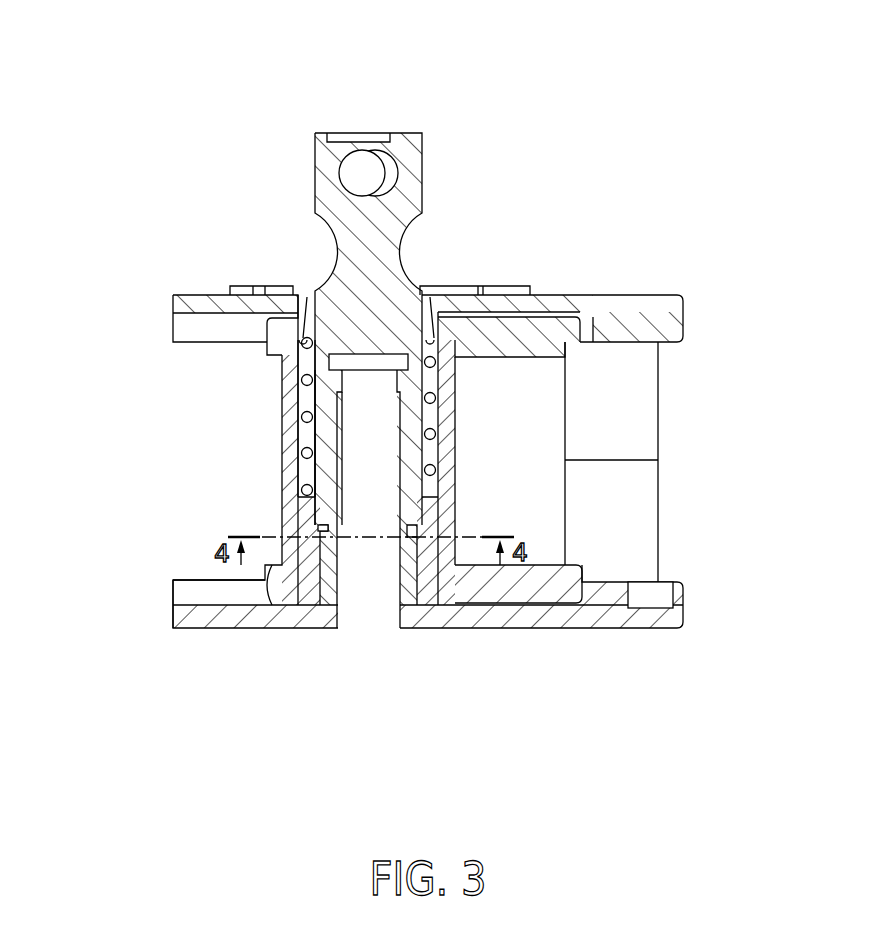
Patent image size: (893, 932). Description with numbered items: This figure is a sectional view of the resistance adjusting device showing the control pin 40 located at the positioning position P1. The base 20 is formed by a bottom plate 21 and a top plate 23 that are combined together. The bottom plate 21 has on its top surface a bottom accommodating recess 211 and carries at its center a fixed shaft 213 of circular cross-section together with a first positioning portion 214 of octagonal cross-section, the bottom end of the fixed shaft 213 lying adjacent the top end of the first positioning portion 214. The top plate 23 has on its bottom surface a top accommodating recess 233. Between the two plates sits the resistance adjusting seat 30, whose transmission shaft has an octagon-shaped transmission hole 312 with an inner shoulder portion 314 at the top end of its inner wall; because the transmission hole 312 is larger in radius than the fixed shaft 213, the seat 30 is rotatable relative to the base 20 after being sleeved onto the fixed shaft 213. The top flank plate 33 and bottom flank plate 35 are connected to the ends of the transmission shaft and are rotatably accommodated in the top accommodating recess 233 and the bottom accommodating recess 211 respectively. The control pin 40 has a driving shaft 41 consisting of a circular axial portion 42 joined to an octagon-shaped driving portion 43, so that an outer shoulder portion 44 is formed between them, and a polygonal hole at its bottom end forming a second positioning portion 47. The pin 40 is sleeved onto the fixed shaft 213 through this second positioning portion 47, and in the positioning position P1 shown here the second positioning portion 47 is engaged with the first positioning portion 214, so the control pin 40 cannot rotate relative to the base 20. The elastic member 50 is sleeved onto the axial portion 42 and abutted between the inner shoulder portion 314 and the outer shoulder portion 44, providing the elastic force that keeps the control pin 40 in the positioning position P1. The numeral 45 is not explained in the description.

The positioning position P1 is at (270, 116).
The base 20 is at (179, 275).
The bottom plate 21 is at (683, 621).
The bottom accommodating recess 211 is at (590, 597).
The fixed shaft 213 is at (332, 440).
The first positioning portion 214 is at (320, 530).
The top plate 23 is at (675, 323).
The top accommodating recess 233 is at (592, 323).
The resistance adjusting seat 30 is at (242, 376).
The transmission hole 312 is at (305, 401).
The inner shoulder portion 314 is at (431, 338).
The top flank plate 33 is at (565, 333).
The bottom flank plate 35 is at (555, 585).
The control pin 40 is at (423, 91).
The driving shaft 41 is at (480, 686).
The axial portion 42 is at (410, 438).
The driving portion 43 is at (432, 545).
The outer shoulder portion 44 is at (455, 510).
The pin hole 45 is at (417, 155).
The second positioning portion 47 is at (296, 580).
The elastic member 50 is at (430, 398).